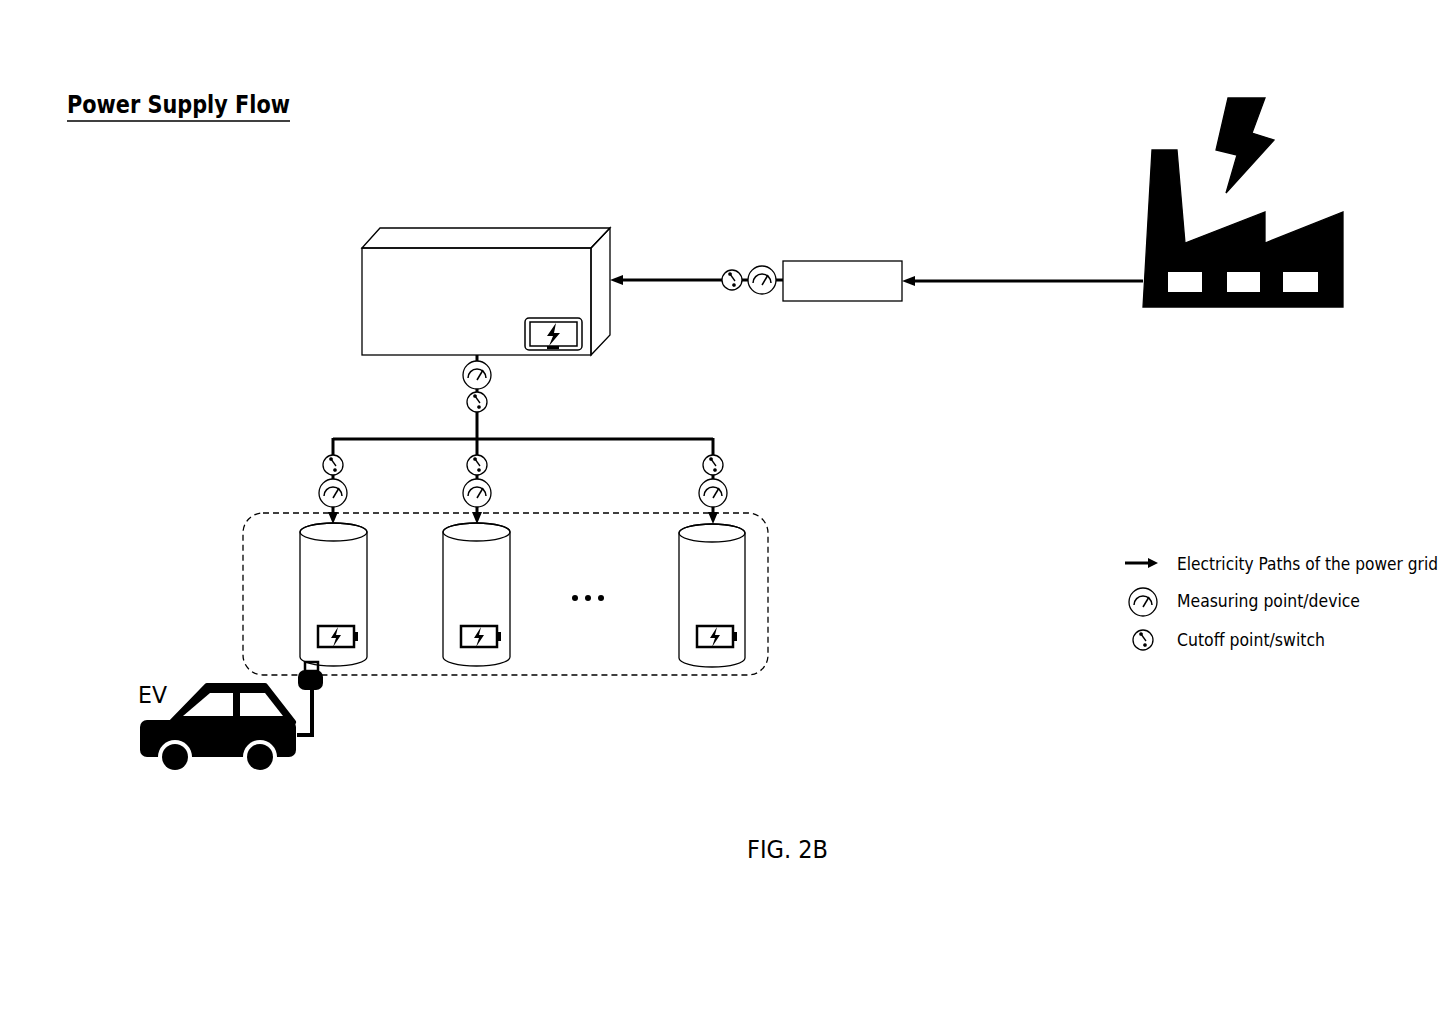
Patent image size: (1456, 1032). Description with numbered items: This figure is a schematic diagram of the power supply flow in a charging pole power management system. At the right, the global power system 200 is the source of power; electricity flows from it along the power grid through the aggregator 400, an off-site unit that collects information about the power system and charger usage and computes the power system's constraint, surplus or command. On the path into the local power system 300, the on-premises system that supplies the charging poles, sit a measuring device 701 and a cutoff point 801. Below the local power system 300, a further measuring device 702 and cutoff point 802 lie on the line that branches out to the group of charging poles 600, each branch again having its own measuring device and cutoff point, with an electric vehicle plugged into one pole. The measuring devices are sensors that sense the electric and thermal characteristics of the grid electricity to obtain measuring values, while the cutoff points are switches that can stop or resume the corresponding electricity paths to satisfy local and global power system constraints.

The global power system 200 is at (1343, 222).
The local power system 300 is at (612, 237).
The aggregator 400 is at (902, 261).
The charging pole 600 is at (243, 525).
The measuring device 701 is at (766, 266).
The measuring device 702 is at (495, 375).
The cutoff point 801 is at (727, 290).
The cutoff point 802 is at (460, 401).